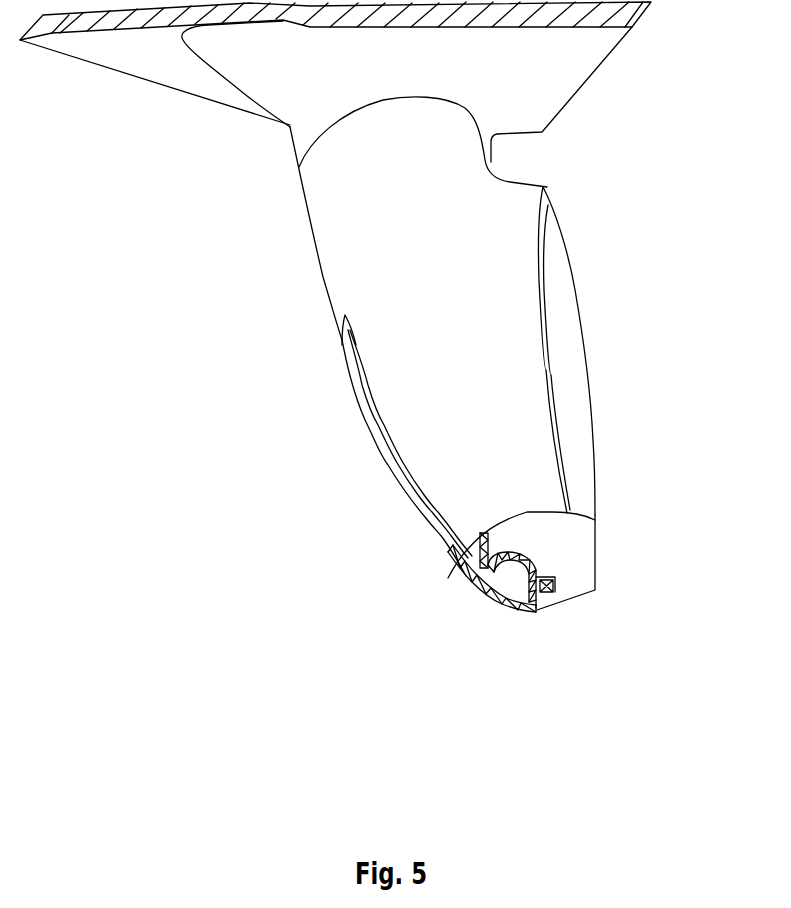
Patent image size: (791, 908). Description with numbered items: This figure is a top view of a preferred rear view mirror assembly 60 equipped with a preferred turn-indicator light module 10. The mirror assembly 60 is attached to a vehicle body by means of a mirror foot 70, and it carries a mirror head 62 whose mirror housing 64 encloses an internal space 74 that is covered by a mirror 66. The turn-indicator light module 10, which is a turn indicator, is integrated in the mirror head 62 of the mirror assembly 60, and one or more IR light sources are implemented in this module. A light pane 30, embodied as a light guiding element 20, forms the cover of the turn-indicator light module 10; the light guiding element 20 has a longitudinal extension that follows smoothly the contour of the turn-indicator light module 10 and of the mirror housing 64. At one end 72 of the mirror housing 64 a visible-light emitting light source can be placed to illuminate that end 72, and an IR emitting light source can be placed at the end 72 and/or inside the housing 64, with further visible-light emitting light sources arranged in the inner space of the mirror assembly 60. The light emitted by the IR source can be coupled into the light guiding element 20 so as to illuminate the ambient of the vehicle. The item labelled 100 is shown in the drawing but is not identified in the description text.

The roof 100 is at (112, 60).
The mirror foot 70 is at (528, 82).
The rear view mirror assembly 60 is at (325, 280).
The mirror housing 64 is at (470, 323).
The mirror head 62 is at (507, 252).
The mirror 66 is at (562, 357).
The turn-indicator light module 10 is at (352, 392).
The light guiding element 20 is at (403, 504).
The light pane 30 is at (378, 428).
The internal space 74 is at (448, 578).
The end of the mirror housing 72 is at (518, 613).